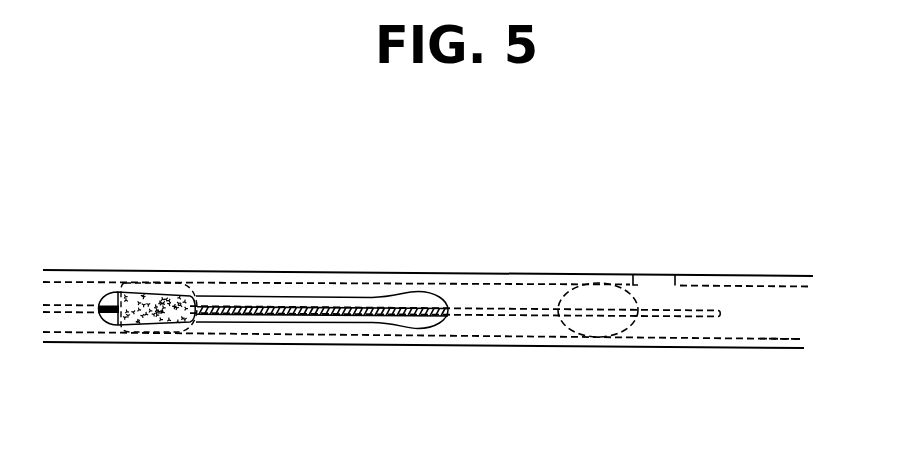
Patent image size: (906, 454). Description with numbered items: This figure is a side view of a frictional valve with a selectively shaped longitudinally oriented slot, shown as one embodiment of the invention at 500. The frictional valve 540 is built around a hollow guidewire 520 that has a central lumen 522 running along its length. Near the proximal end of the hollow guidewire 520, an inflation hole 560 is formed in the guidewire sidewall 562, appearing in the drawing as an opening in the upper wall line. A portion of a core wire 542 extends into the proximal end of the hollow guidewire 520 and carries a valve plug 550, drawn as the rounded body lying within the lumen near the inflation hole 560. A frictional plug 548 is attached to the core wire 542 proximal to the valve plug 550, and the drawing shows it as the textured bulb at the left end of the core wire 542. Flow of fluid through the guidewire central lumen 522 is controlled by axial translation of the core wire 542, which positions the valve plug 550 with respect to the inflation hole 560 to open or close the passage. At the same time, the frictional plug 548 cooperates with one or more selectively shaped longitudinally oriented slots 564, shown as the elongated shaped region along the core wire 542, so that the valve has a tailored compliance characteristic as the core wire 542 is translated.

The frictional valve embodiment 500 is at (164, 110).
The hollow guidewire 520 is at (710, 348).
The central lumen 522 is at (803, 313).
The frictional valve 540 is at (349, 212).
The core wire 542 is at (80, 305).
The frictional plug 548 is at (187, 322).
The valve plug 550 is at (638, 330).
The inflation hole 560 is at (655, 277).
The guidewire sidewall 562 is at (690, 277).
The selectively shaped longitudinally oriented slot 564 is at (333, 322).